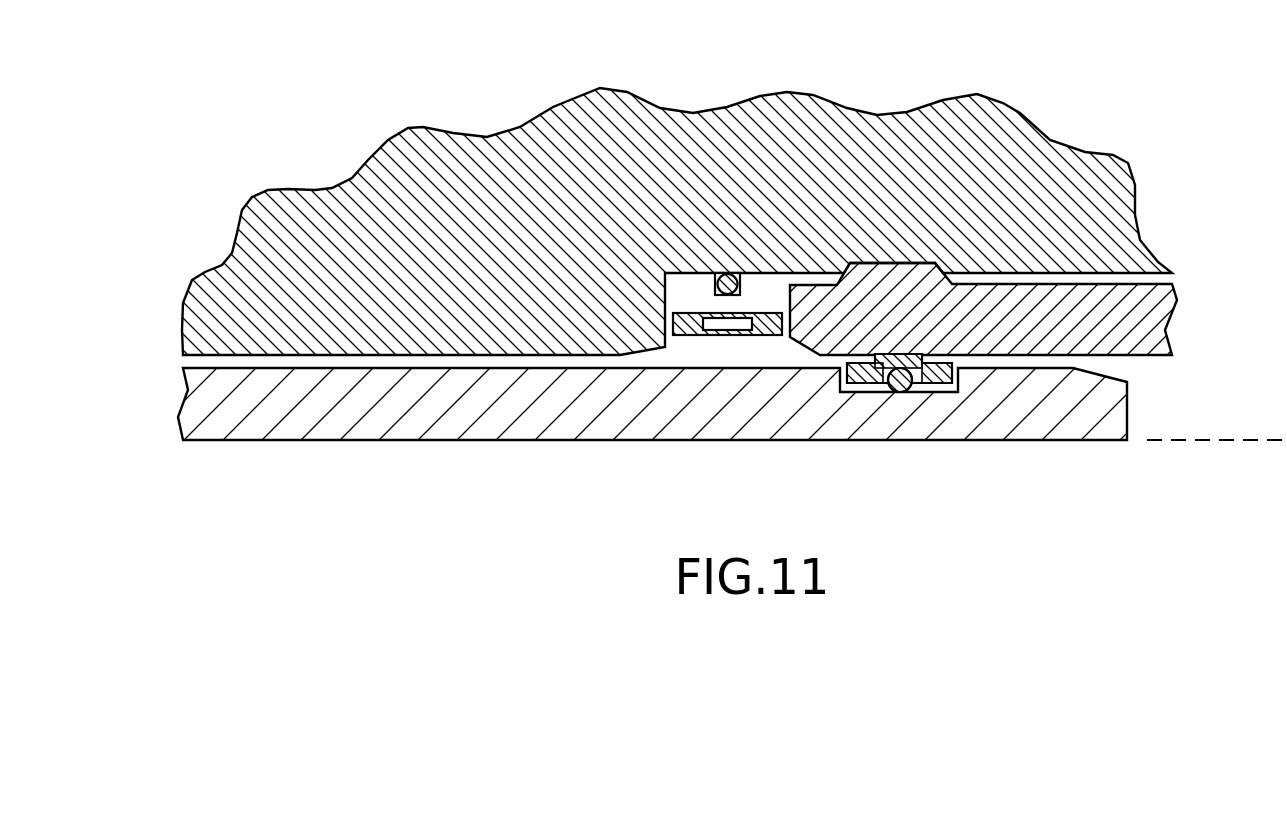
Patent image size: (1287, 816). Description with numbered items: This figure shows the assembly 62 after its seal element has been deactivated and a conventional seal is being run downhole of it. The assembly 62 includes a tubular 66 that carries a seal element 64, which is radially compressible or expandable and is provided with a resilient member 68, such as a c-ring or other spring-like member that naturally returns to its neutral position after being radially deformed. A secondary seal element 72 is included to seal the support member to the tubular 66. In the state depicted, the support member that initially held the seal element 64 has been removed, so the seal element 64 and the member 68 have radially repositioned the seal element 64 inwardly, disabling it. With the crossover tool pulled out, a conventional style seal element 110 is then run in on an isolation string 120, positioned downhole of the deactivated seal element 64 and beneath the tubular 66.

The assembly 62 is at (679, 199).
The seal element 64 is at (783, 323).
The tubular 66 is at (537, 283).
The resilient member 68 is at (720, 329).
The secondary seal element 72 is at (729, 274).
The conventional style seal element 110 is at (978, 362).
The isolation string 120 is at (530, 412).